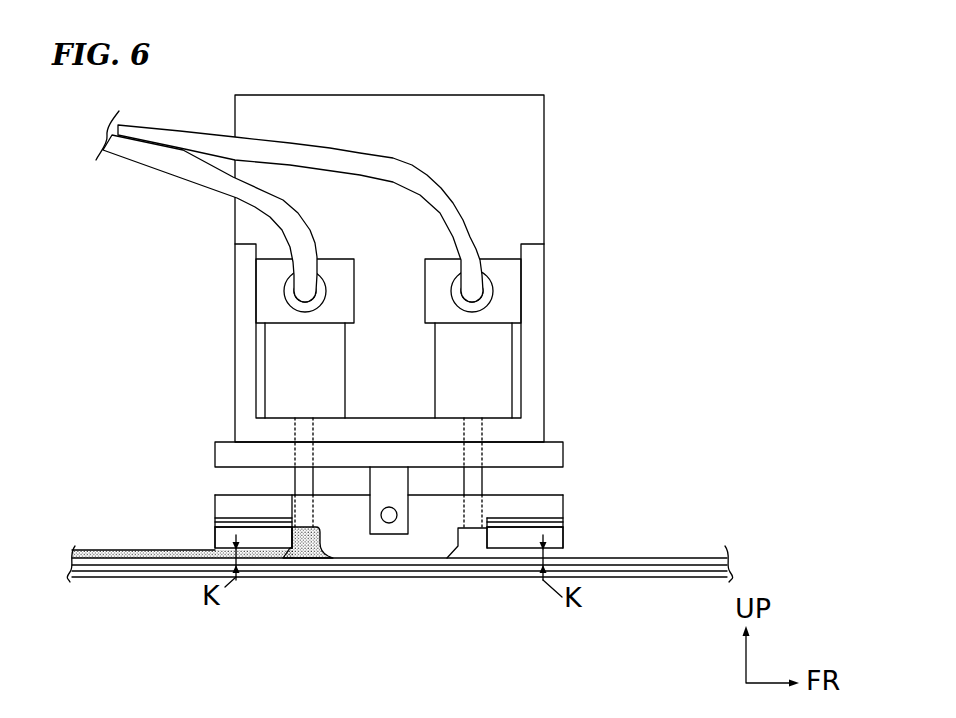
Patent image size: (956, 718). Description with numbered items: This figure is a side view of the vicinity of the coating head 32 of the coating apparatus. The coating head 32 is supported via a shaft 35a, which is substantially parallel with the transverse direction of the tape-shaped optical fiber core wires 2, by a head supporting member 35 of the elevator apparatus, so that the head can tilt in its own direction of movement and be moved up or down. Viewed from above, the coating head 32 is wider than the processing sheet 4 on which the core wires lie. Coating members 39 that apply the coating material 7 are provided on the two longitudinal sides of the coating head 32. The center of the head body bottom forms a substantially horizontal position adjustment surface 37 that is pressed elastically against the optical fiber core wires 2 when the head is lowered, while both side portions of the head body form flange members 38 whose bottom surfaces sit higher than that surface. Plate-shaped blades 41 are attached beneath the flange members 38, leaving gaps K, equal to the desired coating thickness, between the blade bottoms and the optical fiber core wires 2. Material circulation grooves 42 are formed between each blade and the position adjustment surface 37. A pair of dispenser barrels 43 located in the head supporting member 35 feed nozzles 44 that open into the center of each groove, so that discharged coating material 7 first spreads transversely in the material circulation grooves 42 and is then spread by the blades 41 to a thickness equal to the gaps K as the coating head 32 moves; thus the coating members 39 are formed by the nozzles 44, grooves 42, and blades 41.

The optical fiber core wires 2 is at (399, 523).
The processing sheet 4 is at (688, 567).
The coating material 7 is at (120, 548).
The coating head 32 is at (567, 496).
The head supporting member 35 is at (421, 357).
The shaft 35a is at (385, 524).
The floor 37 is at (399, 578).
The flange members 38 is at (215, 510).
The coating members 39 is at (390, 581).
The blades 41 is at (213, 538).
The material circulation grooves 42 is at (302, 554).
The dispenser barrels 43 is at (265, 353).
The nozzles 44 is at (295, 507).